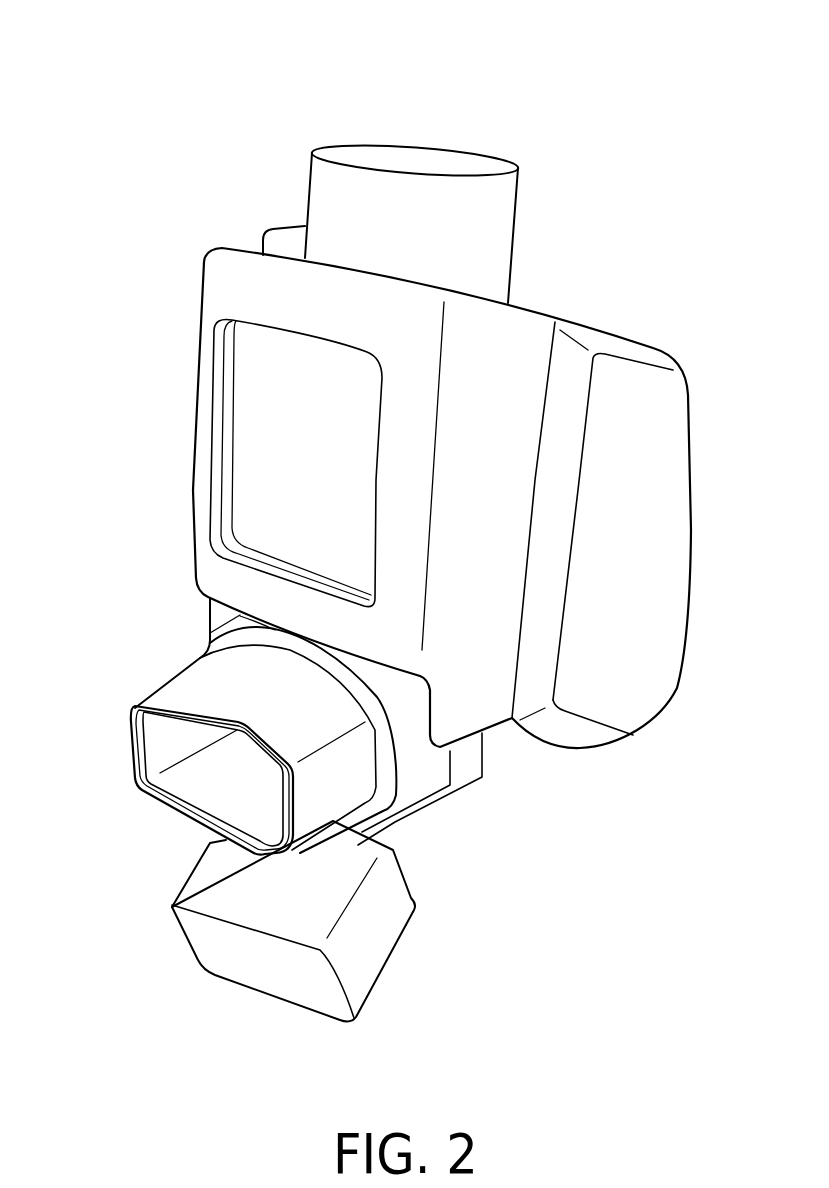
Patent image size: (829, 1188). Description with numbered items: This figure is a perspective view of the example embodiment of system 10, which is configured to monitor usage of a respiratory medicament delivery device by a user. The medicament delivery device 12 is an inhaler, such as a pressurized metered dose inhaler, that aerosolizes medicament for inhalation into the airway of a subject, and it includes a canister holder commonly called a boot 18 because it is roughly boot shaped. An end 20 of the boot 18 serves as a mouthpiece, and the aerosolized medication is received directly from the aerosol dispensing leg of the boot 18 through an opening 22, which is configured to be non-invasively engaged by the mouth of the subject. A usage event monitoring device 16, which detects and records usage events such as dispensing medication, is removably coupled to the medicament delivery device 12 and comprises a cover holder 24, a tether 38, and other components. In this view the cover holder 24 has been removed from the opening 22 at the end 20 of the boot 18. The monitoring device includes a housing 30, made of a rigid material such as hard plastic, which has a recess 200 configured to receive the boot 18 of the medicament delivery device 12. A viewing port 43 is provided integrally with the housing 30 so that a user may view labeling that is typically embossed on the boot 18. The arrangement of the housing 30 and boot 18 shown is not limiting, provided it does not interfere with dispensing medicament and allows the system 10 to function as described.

The system 10 is at (104, 92).
The medicament delivery device 12 is at (407, 160).
The usage event monitoring device 16 is at (620, 330).
The boot 18 is at (292, 226).
The end 20 is at (180, 677).
The opening 22 is at (228, 793).
The cover holder 24 is at (392, 960).
The housing 30 is at (498, 464).
The tether 38 is at (415, 833).
The viewing port 43 is at (308, 464).
The recess 200 is at (528, 294).